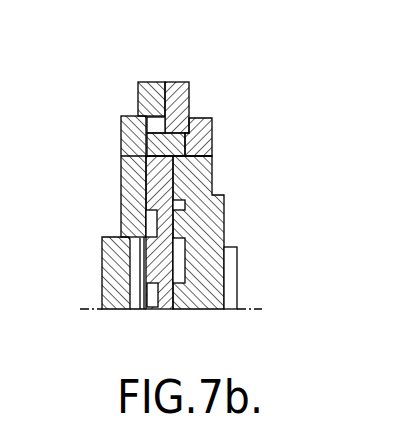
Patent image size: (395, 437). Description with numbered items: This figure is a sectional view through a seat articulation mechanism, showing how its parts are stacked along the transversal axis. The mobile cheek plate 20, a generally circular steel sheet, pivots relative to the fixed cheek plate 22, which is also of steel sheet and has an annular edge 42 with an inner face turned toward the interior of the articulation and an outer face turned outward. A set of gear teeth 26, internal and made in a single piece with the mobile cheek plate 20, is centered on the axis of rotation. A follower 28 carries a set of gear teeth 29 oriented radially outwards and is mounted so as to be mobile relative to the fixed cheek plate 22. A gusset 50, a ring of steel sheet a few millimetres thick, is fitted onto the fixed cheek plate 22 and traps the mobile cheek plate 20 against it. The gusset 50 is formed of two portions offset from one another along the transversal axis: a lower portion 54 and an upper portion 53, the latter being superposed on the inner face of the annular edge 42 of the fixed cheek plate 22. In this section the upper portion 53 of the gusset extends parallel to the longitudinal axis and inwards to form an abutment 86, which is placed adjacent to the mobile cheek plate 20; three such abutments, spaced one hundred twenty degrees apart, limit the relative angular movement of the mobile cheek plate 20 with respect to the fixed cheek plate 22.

The mobile cheek plate 20 is at (207, 223).
The fixed cheek plate 22 is at (117, 265).
The set of gear teeth 26 is at (121, 123).
The follower 28 is at (138, 186).
The set of gear teeth 29 is at (121, 156).
The annular edge 42 is at (152, 93).
The gusset 50 is at (214, 118).
The upper portion 53 is at (178, 97).
The lower portion 54 is at (195, 137).
The abutment 86 is at (183, 118).